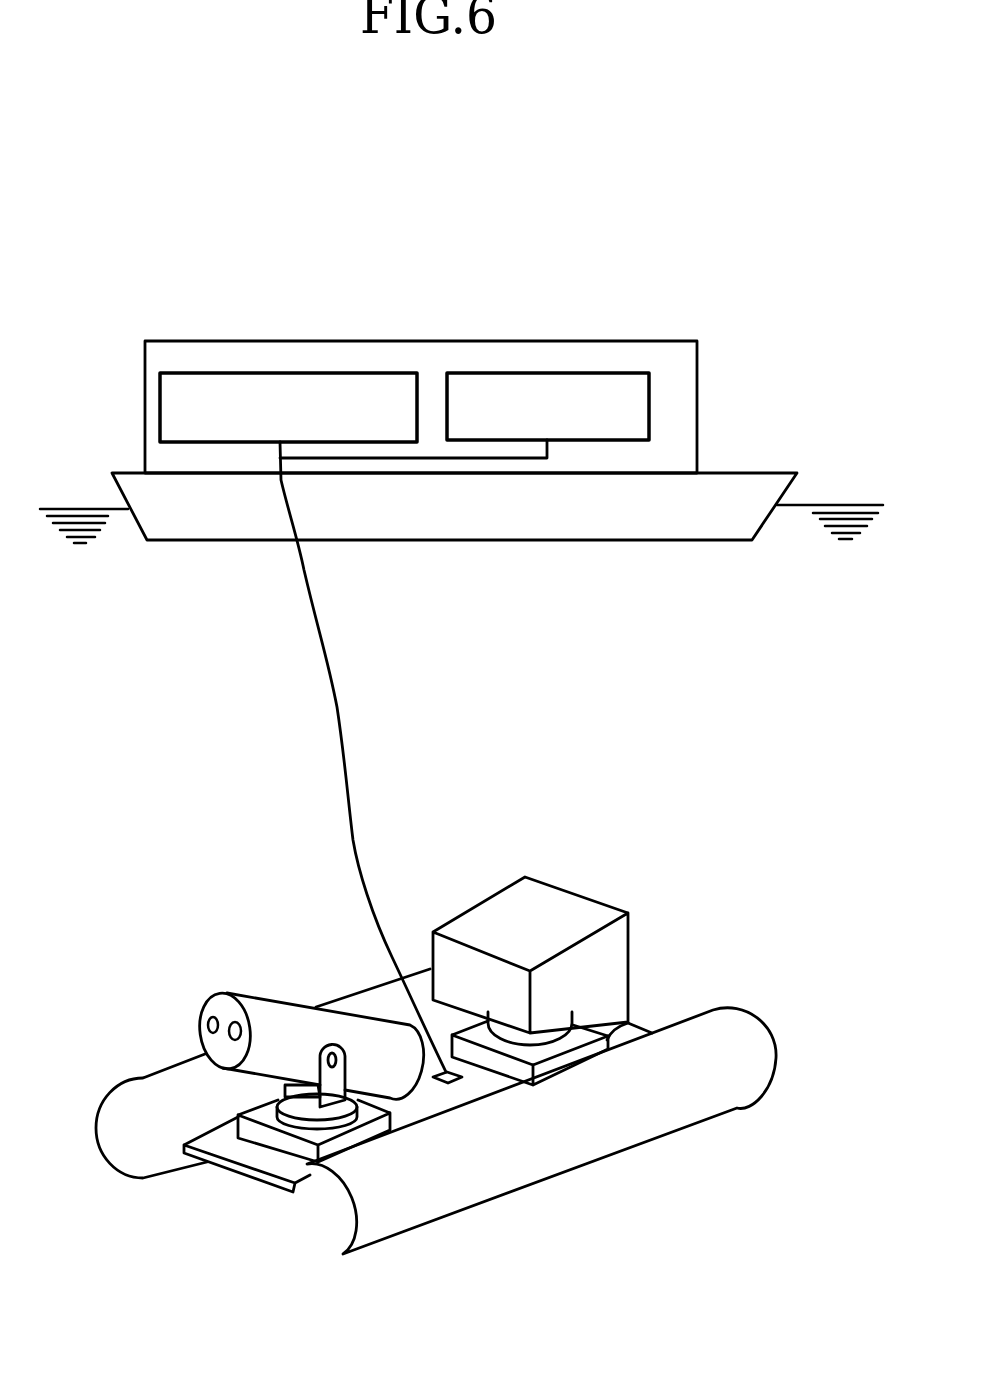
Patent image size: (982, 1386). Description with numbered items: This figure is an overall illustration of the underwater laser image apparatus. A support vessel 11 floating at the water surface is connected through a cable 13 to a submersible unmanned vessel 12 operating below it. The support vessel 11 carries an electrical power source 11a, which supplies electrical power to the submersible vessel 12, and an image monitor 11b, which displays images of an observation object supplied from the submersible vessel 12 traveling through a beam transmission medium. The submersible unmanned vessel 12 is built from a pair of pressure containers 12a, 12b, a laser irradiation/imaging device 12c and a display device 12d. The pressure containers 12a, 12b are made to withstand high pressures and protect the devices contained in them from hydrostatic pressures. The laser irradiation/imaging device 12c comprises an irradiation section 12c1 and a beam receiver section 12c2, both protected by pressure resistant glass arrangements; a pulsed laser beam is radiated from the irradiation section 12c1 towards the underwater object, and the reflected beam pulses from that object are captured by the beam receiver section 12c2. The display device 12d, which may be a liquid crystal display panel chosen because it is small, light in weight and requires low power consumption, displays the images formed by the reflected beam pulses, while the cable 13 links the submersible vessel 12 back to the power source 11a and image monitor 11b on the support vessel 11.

The support vessel 11 is at (449, 321).
The electrical power source 11a is at (287, 373).
The image monitor 11b is at (533, 373).
The submersible unmanned vessel 12 is at (346, 930).
The pressure container 12a is at (160, 1163).
The pressure container 12b is at (711, 1100).
The laser irradiation/imaging device 12c is at (285, 1010).
The irradiation section 12c1 is at (207, 1025).
The beam receiver section 12c2 is at (230, 1041).
The display device 12d is at (555, 903).
The cable 13 is at (337, 712).